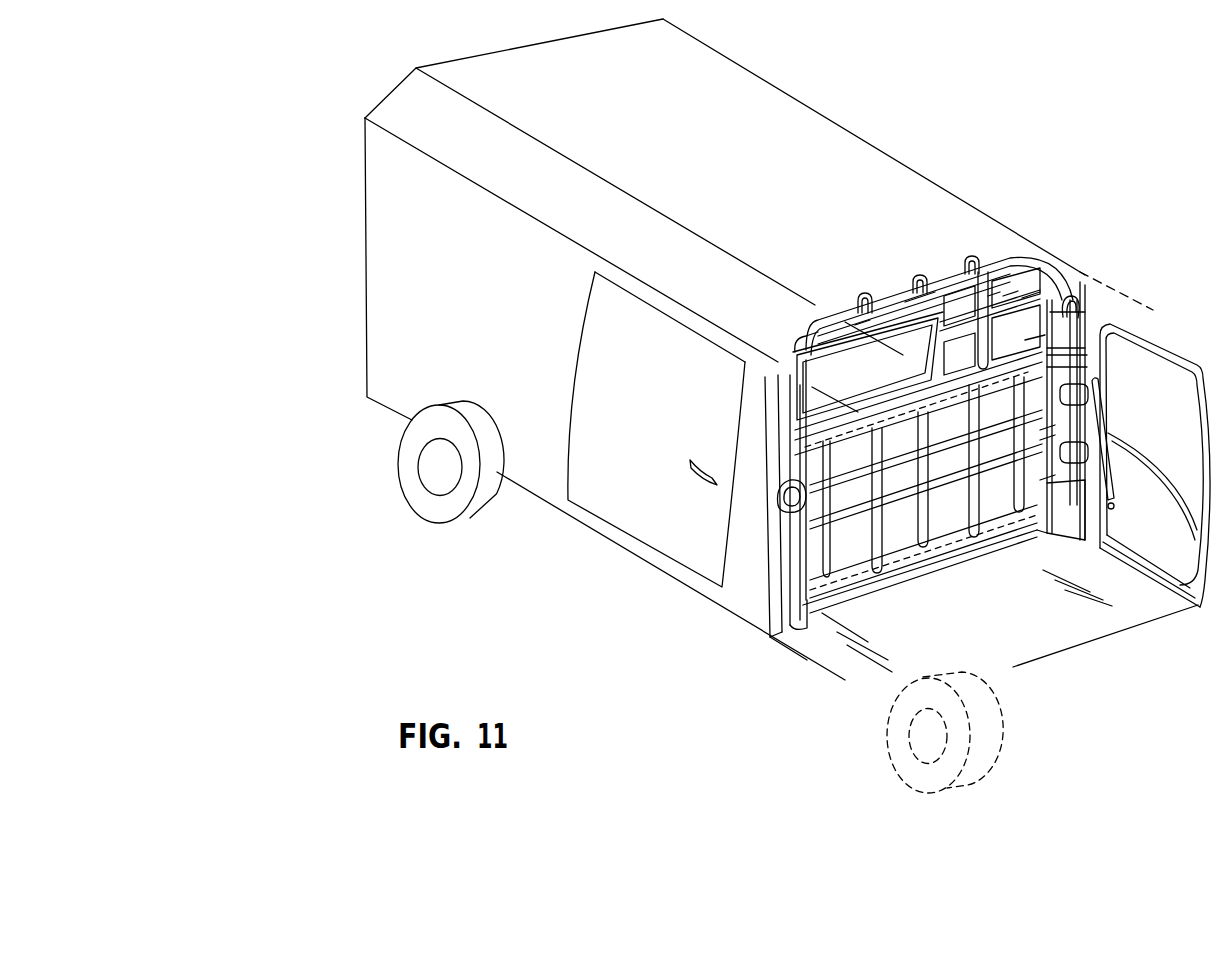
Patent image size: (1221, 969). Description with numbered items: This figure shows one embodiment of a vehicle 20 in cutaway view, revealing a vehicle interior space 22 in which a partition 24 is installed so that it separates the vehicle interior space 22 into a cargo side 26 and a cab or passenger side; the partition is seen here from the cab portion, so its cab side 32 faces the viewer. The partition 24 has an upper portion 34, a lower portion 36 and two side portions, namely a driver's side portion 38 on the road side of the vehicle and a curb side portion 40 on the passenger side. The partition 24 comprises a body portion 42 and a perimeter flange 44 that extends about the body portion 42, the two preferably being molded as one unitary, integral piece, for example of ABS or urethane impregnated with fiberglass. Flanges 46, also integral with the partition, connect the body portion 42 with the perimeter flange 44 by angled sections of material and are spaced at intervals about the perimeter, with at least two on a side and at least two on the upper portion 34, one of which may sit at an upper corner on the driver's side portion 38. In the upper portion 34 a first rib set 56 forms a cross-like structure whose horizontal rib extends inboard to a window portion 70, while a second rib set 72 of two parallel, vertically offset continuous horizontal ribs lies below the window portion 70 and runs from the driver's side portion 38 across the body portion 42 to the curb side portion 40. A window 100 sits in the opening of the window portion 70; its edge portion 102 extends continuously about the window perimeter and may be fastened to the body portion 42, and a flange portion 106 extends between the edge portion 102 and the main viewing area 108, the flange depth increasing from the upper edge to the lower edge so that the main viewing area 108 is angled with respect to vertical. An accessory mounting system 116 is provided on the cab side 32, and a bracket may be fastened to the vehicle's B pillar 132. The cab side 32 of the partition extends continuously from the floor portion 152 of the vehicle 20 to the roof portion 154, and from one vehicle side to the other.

The vehicle 20 is at (905, 394).
The vehicle interior space 22 is at (1114, 604).
The partition 24 is at (1032, 345).
The cargo side 26 is at (1168, 377).
The cab side 32 is at (1073, 305).
The upper portion 34 is at (1012, 290).
The lower portion 36 is at (1114, 507).
The driver's side portion 38 is at (995, 288).
The curb side portion 40 is at (858, 300).
The body portion 42 is at (818, 463).
The perimeter flange 44 is at (909, 290).
The flanges 46 is at (960, 262).
The first rib set 56 is at (1030, 293).
The window portion 70 is at (812, 352).
The second rib set 72 is at (814, 502).
The window 100 is at (843, 377).
The edge portion 102 is at (863, 323).
The flange portion 106 is at (918, 307).
The main viewing area 108 is at (830, 374).
The accessory mounting system 116 is at (882, 580).
The B pillar 132 is at (1082, 297).
The floor portion 152 is at (963, 624).
The roof portion 154 is at (845, 202).